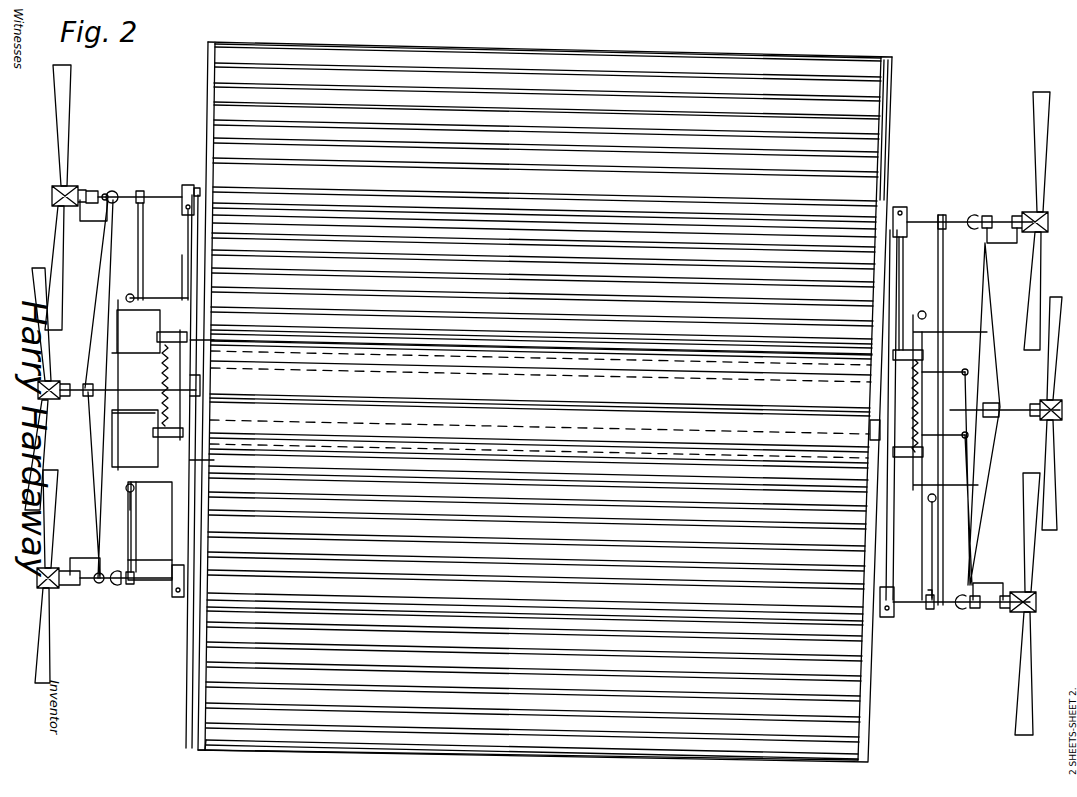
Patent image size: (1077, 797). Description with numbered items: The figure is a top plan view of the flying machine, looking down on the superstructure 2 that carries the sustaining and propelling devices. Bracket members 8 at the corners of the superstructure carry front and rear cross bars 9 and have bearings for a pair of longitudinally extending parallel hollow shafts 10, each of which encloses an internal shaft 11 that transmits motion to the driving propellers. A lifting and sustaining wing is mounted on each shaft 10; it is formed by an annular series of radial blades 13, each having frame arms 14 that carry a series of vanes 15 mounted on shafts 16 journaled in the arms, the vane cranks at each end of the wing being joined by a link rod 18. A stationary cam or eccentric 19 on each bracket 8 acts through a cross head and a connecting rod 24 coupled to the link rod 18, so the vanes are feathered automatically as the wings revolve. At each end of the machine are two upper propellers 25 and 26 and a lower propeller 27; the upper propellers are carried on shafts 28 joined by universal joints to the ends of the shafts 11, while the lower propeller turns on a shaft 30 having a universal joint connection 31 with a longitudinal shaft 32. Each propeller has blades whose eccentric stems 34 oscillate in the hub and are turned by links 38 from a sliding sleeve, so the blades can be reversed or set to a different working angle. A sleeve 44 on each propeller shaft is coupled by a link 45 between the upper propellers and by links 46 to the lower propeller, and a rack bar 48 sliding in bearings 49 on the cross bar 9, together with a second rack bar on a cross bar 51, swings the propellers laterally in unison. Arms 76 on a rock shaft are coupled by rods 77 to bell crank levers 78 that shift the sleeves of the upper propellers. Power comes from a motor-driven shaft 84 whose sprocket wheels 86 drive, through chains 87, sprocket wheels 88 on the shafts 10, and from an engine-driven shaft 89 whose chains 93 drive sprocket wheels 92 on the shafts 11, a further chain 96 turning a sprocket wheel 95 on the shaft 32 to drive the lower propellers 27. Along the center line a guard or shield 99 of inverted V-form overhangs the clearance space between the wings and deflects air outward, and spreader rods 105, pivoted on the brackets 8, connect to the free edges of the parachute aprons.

The superstructure 2 is at (904, 247).
The bracket members 8 is at (182, 190).
The cross bars 9 is at (186, 228).
The hollow shafts 10 is at (131, 586).
The internal shafts 11 is at (115, 584).
The radial blades 13 is at (281, 62).
The frame arms 14 is at (186, 672).
The vanes 15 is at (460, 740).
The vane shafts 16 is at (272, 738).
The link rod 18 is at (192, 725).
The stationary cam 19 is at (190, 240).
The connecting rod 24 is at (896, 148).
The upper propeller 25 is at (52, 164).
The upper propeller 26 is at (1026, 573).
The lower propeller 27 is at (1046, 446).
The propeller shafts 28 is at (98, 197).
The shaft 30 is at (75, 396).
The universal joint connection 31 is at (88, 384).
The longitudinally extending shaft 32 is at (198, 386).
The eccentric stems 34 is at (181, 268).
The links 38 is at (72, 190).
The sleeve 44 is at (113, 190).
The connecting link 45 is at (100, 268).
The links 46 is at (92, 312).
The rack bar 48 is at (832, 412).
The bearings 49 is at (880, 385).
The cross bar 51 is at (160, 346).
The arms 76 is at (936, 433).
The links 77 is at (947, 368).
The bell crank levers 78 is at (96, 542).
The drive shaft 84 is at (538, 466).
The sprocket wheels 86 is at (128, 492).
The sprocket chains 87 is at (138, 535).
The sprocket wheels 88 is at (150, 560).
The engine shaft 89 is at (175, 298).
The sprocket wheels 92 is at (930, 597).
The chains 93 is at (138, 243).
The sprocket wheel 95 is at (150, 432).
The chain 96 is at (98, 356).
The guard or shield 99 is at (540, 407).
The spreader rods 105 is at (194, 188).